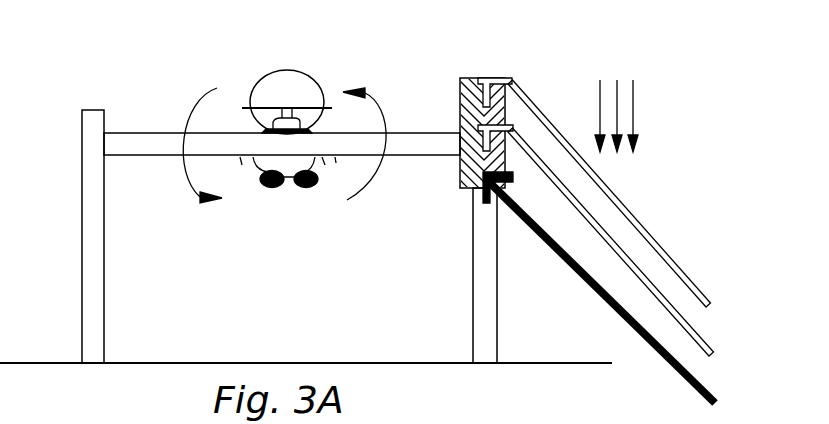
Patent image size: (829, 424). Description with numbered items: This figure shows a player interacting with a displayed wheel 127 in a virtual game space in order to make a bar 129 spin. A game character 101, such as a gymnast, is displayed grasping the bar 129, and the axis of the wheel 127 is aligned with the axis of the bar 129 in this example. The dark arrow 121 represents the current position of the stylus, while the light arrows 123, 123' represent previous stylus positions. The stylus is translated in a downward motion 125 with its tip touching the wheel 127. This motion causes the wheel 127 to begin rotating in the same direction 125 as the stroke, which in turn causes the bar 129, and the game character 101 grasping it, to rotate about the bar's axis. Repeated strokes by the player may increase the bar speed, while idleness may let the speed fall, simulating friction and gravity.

The game character 101 is at (291, 70).
The dark arrow 121 is at (678, 380).
The light arrow 123 is at (638, 242).
The light arrow 123' is at (634, 193).
The downward motion 125 is at (634, 104).
The wheel 127 is at (473, 87).
The bar 129 is at (137, 147).